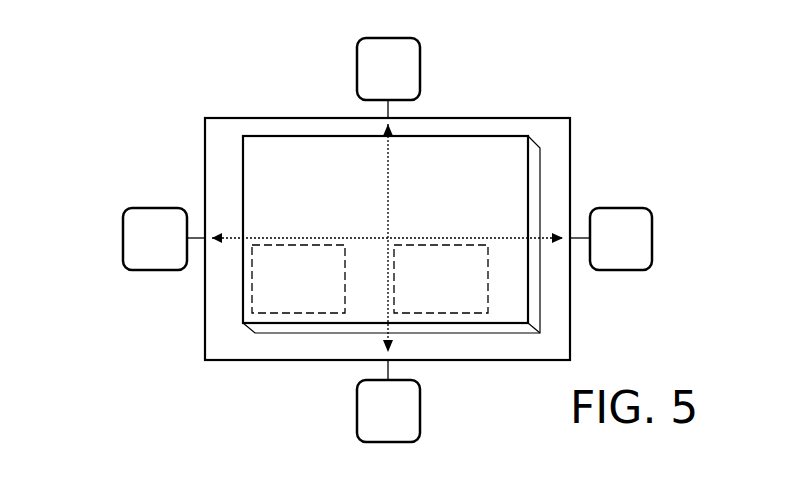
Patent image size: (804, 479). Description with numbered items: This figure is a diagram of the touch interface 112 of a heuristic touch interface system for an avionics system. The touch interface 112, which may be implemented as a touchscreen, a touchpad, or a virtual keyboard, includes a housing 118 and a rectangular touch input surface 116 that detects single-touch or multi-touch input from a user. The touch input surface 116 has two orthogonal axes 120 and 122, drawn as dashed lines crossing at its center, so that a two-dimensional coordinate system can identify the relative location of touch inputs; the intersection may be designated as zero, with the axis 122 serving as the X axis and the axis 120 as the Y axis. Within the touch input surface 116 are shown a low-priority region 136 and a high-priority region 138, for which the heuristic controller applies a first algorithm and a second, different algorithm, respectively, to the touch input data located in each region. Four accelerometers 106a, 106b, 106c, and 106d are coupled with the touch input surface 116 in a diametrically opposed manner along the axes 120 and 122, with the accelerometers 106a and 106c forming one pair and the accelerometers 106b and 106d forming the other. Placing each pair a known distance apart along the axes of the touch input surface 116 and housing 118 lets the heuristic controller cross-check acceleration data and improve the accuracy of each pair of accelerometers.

The touch interface 112 is at (255, 116).
The touch input surface 116 is at (348, 204).
The housing 118 is at (570, 198).
The axis 120 is at (510, 243).
The axis 122 is at (388, 167).
The low-priority region 136 is at (268, 328).
The high-priority region 138 is at (472, 335).
The accelerometer 106a is at (420, 70).
The accelerometer 106b is at (652, 238).
The accelerometer 106c is at (420, 412).
The accelerometer 106d is at (123, 233).